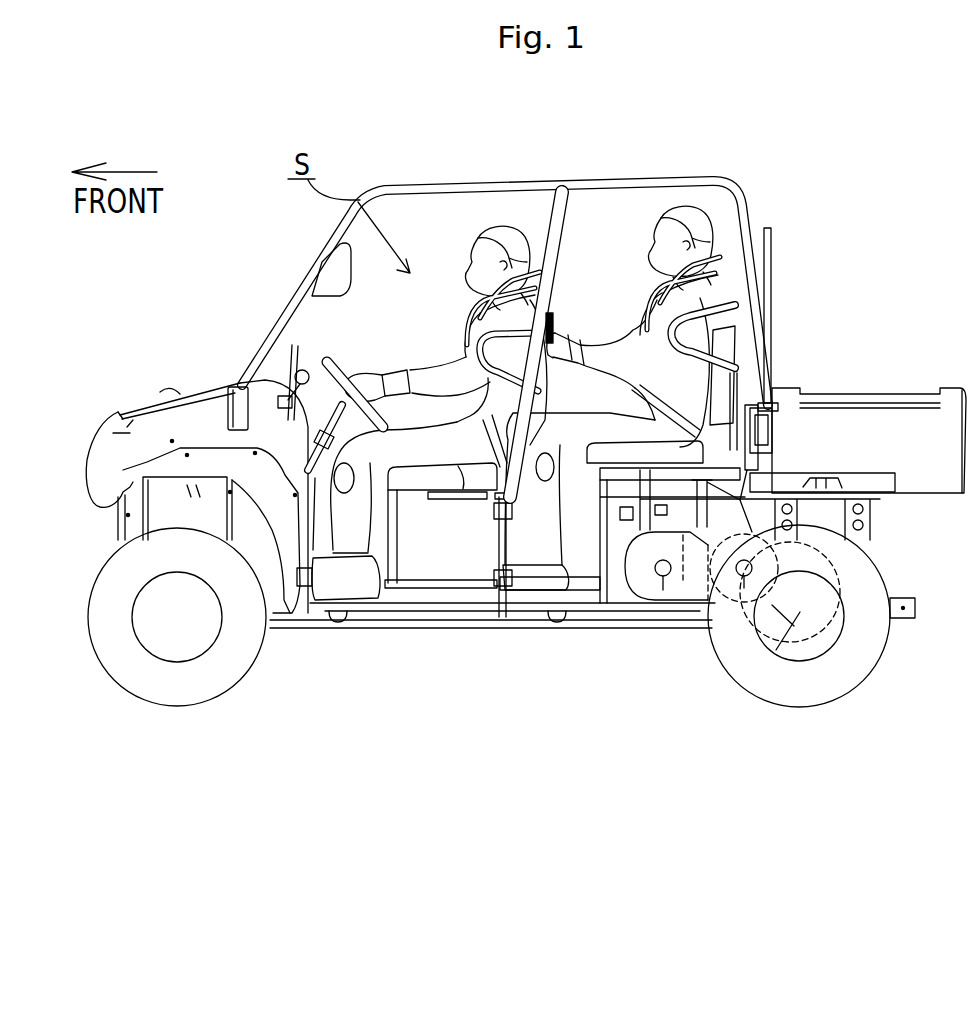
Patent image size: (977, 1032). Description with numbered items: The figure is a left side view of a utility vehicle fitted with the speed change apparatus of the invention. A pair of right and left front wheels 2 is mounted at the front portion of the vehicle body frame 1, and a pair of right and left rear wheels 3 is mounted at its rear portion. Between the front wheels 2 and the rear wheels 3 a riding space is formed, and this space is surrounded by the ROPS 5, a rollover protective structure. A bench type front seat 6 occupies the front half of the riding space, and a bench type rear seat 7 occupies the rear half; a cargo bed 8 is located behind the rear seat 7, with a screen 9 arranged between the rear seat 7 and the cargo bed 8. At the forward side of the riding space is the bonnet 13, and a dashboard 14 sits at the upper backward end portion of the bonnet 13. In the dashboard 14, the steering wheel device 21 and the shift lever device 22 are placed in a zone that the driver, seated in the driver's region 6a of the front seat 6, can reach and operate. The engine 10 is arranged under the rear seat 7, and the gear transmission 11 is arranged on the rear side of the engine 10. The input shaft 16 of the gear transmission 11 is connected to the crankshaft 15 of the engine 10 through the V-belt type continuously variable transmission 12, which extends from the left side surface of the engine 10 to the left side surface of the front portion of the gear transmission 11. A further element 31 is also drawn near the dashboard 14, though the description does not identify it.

The vehicle body frame 1 is at (492, 617).
The front wheels 2 is at (237, 653).
The rear wheels 3 is at (853, 655).
The ROPS 5 is at (400, 190).
The bench type front seat 6 is at (423, 505).
The driver's region 6a is at (467, 497).
The bench type rear seat 7 is at (590, 480).
The cargo bed 8 is at (895, 366).
The screen 9 is at (768, 293).
The engine 10 is at (665, 600).
The gear transmission 11 is at (770, 660).
The V-belt type continuously variable transmission 12 is at (683, 590).
The bonnet 13 is at (170, 397).
The dashboard 14 is at (280, 387).
The crankshaft 15 is at (668, 600).
The input shaft 16 is at (756, 620).
The steering wheel device 21 is at (347, 363).
The shift lever device 22 is at (315, 363).
The steering shaft 31 is at (290, 367).